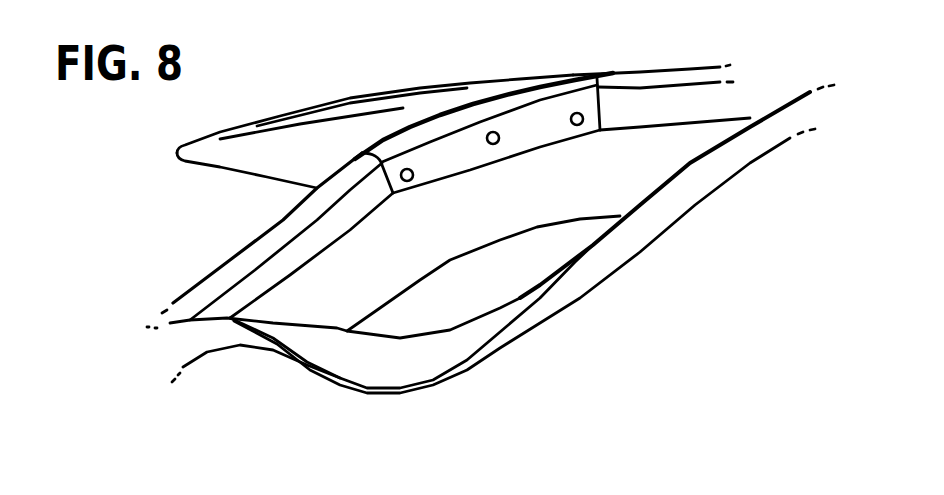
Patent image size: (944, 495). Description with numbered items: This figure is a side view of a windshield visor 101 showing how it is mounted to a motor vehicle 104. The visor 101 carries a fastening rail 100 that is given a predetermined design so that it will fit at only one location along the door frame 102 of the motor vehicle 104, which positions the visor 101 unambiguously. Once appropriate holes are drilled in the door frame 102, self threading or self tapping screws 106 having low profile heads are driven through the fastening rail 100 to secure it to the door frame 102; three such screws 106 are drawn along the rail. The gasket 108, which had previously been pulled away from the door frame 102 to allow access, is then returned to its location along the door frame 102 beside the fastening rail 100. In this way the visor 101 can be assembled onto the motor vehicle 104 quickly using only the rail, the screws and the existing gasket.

The fastening rail 100 is at (522, 132).
The visor 101 is at (273, 146).
The door frame 102 is at (662, 103).
The motor vehicle 104 is at (156, 268).
The self tapping screws 106 is at (413, 175).
The gasket 108 is at (692, 188).